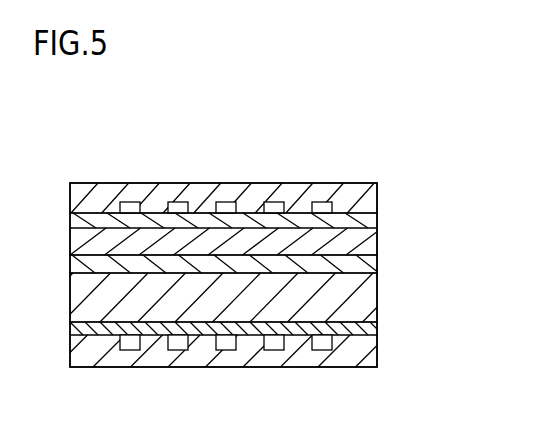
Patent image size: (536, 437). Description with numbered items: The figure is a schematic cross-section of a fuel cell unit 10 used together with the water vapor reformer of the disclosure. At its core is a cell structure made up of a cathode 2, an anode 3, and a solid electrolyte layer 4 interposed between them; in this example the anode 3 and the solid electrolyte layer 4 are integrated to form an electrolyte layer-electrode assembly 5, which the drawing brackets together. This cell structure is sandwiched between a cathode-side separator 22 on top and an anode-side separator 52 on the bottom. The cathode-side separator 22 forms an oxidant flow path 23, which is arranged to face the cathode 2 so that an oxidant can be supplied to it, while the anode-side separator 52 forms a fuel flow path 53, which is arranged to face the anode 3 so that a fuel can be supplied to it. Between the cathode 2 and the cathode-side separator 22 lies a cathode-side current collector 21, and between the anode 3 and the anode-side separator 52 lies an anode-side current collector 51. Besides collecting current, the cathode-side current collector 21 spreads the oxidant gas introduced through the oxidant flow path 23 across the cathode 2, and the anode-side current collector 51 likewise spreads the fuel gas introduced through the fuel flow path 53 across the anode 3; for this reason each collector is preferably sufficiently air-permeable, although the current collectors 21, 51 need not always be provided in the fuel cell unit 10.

The fuel cell unit 10 is at (264, 261).
The cathode-side separator 22 is at (251, 172).
The cathode-side current collector 21 is at (277, 203).
The oxidant flow path 23 is at (182, 203).
The cathode 2 is at (360, 242).
The solid electrolyte layer 4 is at (362, 261).
The anode 3 is at (245, 298).
The electrolyte layer-electrode assembly 5 is at (264, 287).
The anode-side separator 52 is at (249, 371).
The anode-side current collector 51 is at (121, 348).
The fuel flow path 53 is at (225, 347).